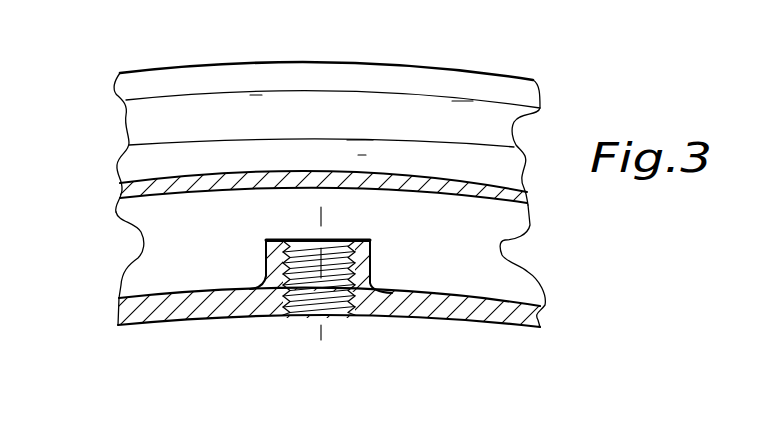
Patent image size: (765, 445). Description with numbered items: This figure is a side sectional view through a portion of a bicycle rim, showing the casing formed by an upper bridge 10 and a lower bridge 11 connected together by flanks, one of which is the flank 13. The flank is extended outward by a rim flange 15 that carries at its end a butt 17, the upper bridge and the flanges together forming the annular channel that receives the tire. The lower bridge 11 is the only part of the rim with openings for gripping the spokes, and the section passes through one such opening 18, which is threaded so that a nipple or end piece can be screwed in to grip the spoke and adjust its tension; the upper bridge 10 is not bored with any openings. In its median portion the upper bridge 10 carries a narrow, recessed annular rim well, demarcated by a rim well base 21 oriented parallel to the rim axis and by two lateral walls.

The upper bridge 10 is at (190, 178).
The lower bridge 11 is at (175, 312).
The flank 13 is at (167, 237).
The rim flange 15 is at (150, 113).
The butt 17 is at (408, 78).
The opening 18 is at (308, 293).
The rim well base 21 is at (485, 193).